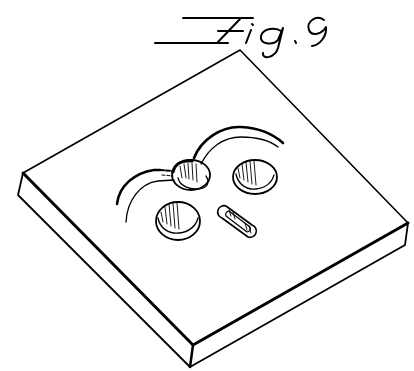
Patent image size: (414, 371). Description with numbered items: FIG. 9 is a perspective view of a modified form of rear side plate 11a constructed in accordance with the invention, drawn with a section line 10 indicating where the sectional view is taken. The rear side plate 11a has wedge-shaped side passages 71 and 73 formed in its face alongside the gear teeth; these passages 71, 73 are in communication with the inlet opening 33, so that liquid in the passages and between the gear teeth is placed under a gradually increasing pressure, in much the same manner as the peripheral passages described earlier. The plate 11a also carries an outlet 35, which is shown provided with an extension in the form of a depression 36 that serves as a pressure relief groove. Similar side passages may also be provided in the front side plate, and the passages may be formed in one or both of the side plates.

The section line 10- 10 is at (182, 104).
The base plate 11a is at (329, 152).
The inlet opening 33 is at (190, 160).
The outlet 35 is at (252, 232).
The depression 36 is at (234, 222).
The wedge-shaped passage 71 is at (145, 172).
The wedge-shaped passage 73 is at (257, 107).